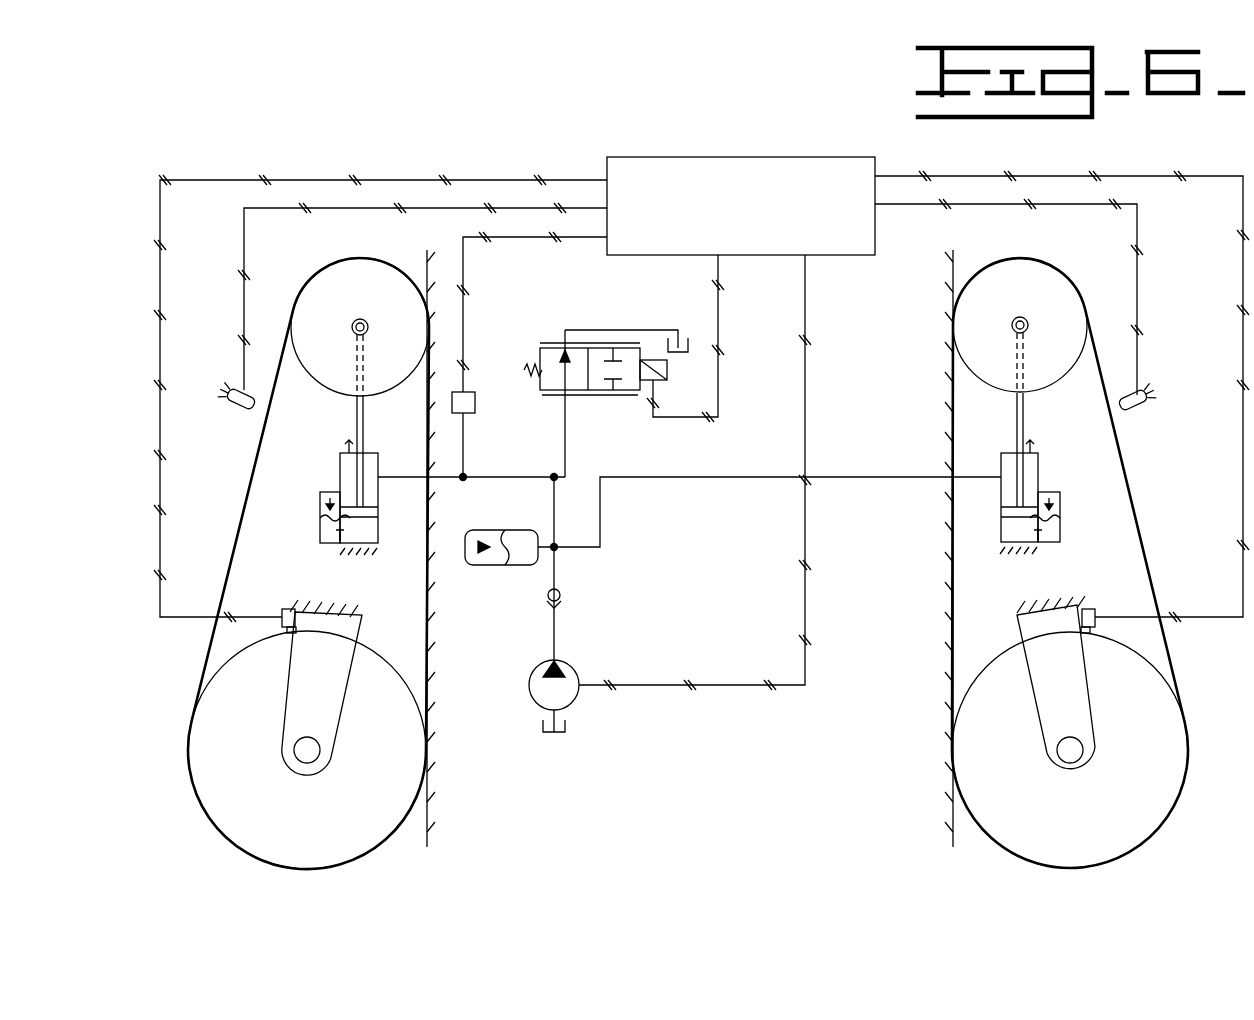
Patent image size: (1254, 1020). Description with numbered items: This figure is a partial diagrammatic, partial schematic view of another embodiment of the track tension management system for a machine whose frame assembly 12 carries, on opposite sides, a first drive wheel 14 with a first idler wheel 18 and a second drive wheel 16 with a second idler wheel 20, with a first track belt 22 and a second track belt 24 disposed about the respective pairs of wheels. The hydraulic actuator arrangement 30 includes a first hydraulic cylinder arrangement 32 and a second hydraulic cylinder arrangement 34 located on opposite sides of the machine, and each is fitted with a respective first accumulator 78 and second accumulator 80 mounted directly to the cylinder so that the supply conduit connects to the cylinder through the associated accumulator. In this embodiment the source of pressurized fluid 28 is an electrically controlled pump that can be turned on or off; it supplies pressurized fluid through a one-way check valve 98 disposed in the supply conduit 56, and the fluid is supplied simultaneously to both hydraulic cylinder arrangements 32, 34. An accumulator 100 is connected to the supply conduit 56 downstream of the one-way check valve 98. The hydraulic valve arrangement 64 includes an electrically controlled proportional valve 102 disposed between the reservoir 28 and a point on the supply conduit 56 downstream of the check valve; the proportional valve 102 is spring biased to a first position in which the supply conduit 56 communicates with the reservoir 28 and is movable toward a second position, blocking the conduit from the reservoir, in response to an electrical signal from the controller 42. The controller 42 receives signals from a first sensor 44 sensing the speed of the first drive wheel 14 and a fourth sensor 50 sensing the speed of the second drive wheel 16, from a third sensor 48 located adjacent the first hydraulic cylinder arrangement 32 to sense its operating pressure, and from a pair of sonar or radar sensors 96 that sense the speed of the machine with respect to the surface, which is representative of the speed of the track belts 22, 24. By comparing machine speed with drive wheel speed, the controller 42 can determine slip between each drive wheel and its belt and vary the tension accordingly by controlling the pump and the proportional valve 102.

The frame assembly 12 is at (305, 686).
The first drive wheel 14 is at (1059, 819).
The second drive wheel 16 is at (292, 834).
The first idler wheel 18 is at (1007, 302).
The second idler wheel 20 is at (347, 302).
The first track belt 22 is at (1132, 497).
The second track belt 24 is at (242, 527).
The reservoir / source of pressurized fluid 28 is at (535, 670).
The hydraulic actuator arrangement 30 is at (702, 563).
The first hydraulic cylinder arrangement 32 is at (1040, 470).
The second hydraulic cylinder arrangement 34 is at (340, 470).
The controller 42 is at (728, 189).
The first sensor 44 is at (1093, 609).
The third sensor 48 is at (476, 395).
The fourth sensor 50 is at (285, 609).
The first supply conduit 56 is at (460, 480).
The first hydraulic valve arrangement 64 is at (552, 320).
The first accumulator 78 is at (1062, 532).
The second accumulator 80 is at (320, 525).
The sonar or radar sensor 96 is at (238, 406).
The one-way check valve 98 is at (561, 594).
The accumulator 100 is at (497, 566).
The electrically controlled proportional valve 102 is at (550, 395).